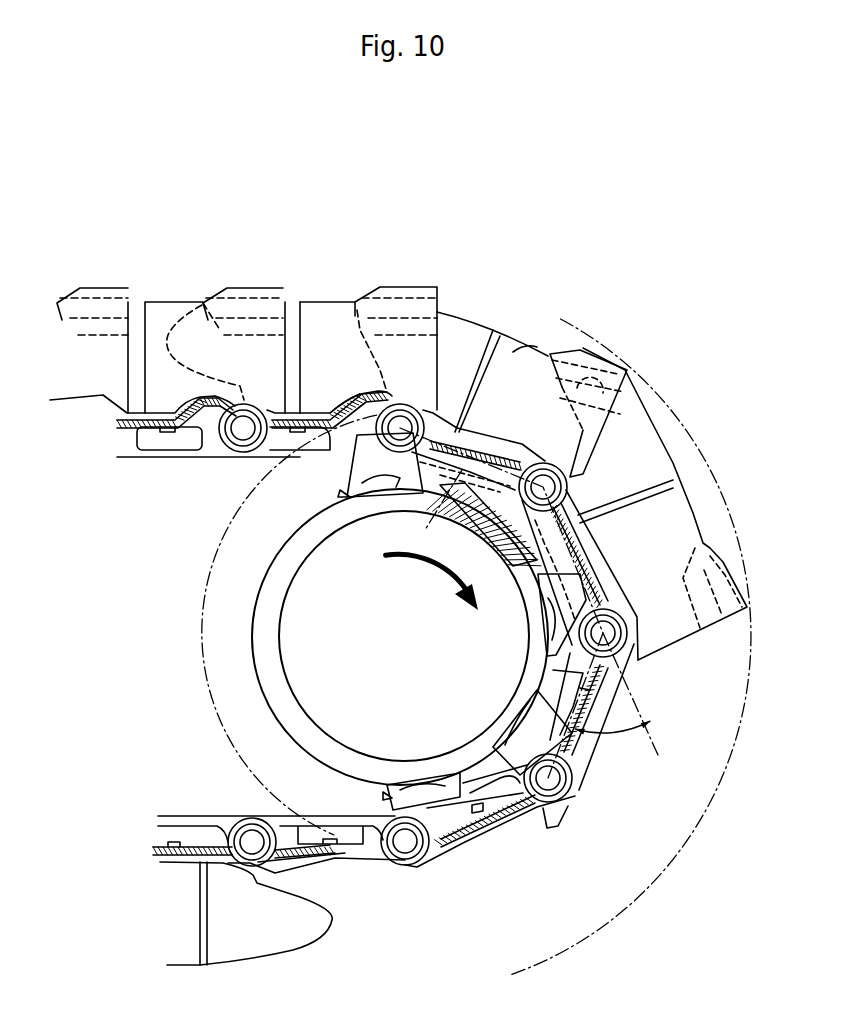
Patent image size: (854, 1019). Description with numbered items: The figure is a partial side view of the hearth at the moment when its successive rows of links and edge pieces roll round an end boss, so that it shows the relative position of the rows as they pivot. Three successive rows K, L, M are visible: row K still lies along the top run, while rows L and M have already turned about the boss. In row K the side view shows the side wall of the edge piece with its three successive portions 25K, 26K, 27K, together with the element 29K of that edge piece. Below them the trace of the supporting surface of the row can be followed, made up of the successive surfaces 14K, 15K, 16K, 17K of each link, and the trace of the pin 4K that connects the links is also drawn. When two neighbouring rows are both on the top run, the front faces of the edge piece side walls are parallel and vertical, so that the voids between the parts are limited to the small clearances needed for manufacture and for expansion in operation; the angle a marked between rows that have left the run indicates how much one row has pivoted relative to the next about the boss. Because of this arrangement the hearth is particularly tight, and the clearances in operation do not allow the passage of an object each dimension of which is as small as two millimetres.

The third portion of edge piece side wall 27K is at (197, 327).
The second portion of edge piece side wall 26K is at (290, 300).
The first portion of edge piece side wall 25K is at (343, 317).
The row of links and edge pieces K is at (345, 320).
The element of edge piece 29K is at (413, 290).
The pin 4K is at (457, 433).
The link surface 14K is at (283, 402).
The link surface 15K is at (343, 402).
The link surface 16K is at (380, 393).
The link surface 17K is at (438, 412).
The row of links and edge pieces L is at (560, 320).
The row of links and edge pieces M is at (663, 533).
The angle a is at (612, 726).